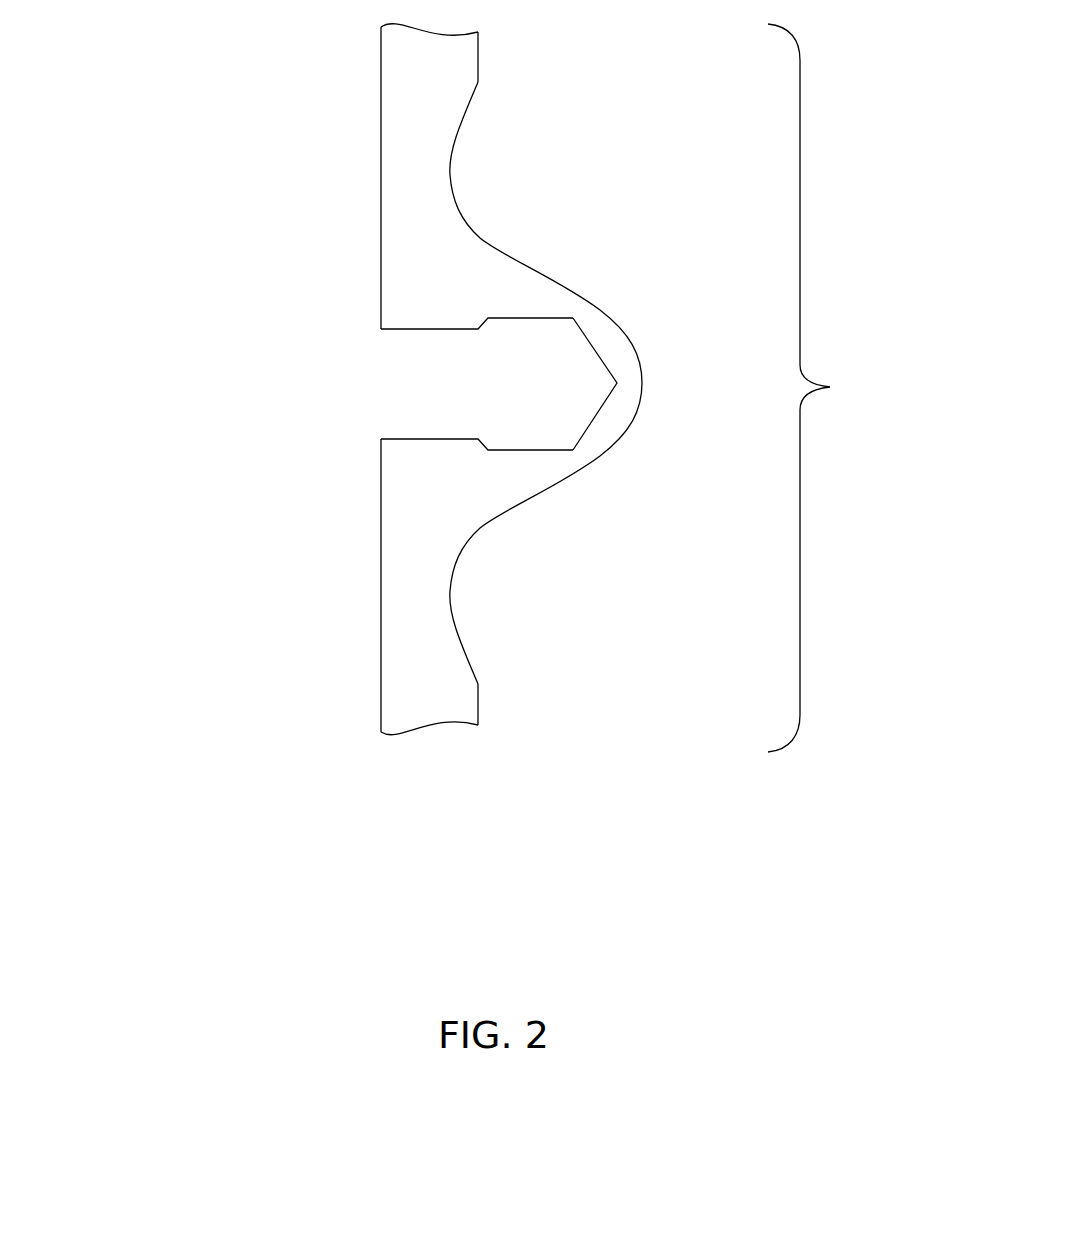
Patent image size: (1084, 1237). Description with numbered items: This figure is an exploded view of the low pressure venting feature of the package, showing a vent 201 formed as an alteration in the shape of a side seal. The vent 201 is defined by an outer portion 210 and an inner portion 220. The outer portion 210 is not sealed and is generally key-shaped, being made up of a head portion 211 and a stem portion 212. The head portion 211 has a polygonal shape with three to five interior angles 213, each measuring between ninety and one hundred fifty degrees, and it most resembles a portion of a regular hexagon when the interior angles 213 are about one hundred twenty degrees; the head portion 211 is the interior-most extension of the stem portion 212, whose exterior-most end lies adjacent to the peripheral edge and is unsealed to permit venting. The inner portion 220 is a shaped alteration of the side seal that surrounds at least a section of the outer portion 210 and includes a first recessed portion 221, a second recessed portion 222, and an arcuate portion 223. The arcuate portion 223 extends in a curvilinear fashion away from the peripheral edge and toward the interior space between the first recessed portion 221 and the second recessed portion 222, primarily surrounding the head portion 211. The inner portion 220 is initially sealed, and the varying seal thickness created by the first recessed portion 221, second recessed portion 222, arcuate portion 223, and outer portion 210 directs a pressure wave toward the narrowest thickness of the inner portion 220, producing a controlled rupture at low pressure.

The vent 201 is at (275, 115).
The outer portion 210 is at (417, 370).
The head portion 211 is at (517, 310).
The stem portion 212 is at (433, 443).
The interior angles 213 is at (563, 332).
The inner portion 220 is at (667, 388).
The first recessed portion 221 is at (450, 170).
The second recessed portion 222 is at (450, 598).
The arcuate portion 223 is at (640, 353).